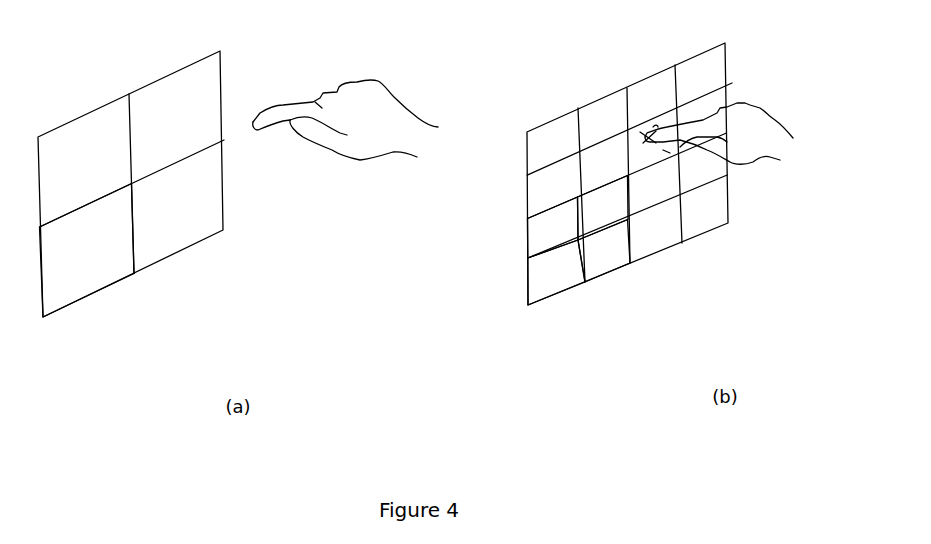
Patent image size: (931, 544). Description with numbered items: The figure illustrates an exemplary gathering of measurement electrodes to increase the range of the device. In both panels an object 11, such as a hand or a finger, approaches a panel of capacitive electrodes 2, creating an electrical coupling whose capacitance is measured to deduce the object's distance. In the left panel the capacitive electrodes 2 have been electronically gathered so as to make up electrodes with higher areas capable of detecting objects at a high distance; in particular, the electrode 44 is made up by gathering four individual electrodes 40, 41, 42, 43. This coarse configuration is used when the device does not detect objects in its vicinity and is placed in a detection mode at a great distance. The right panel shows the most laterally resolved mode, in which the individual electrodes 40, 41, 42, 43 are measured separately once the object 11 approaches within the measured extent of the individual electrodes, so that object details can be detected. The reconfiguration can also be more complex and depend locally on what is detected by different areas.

The capacitive electrodes 2 is at (98, 127).
The object 11 is at (358, 160).
The electrode 40 is at (602, 253).
The electrode 41 is at (560, 278).
The electrode 42 is at (543, 228).
The electrode 43 is at (602, 218).
The electrode 44 is at (86, 262).